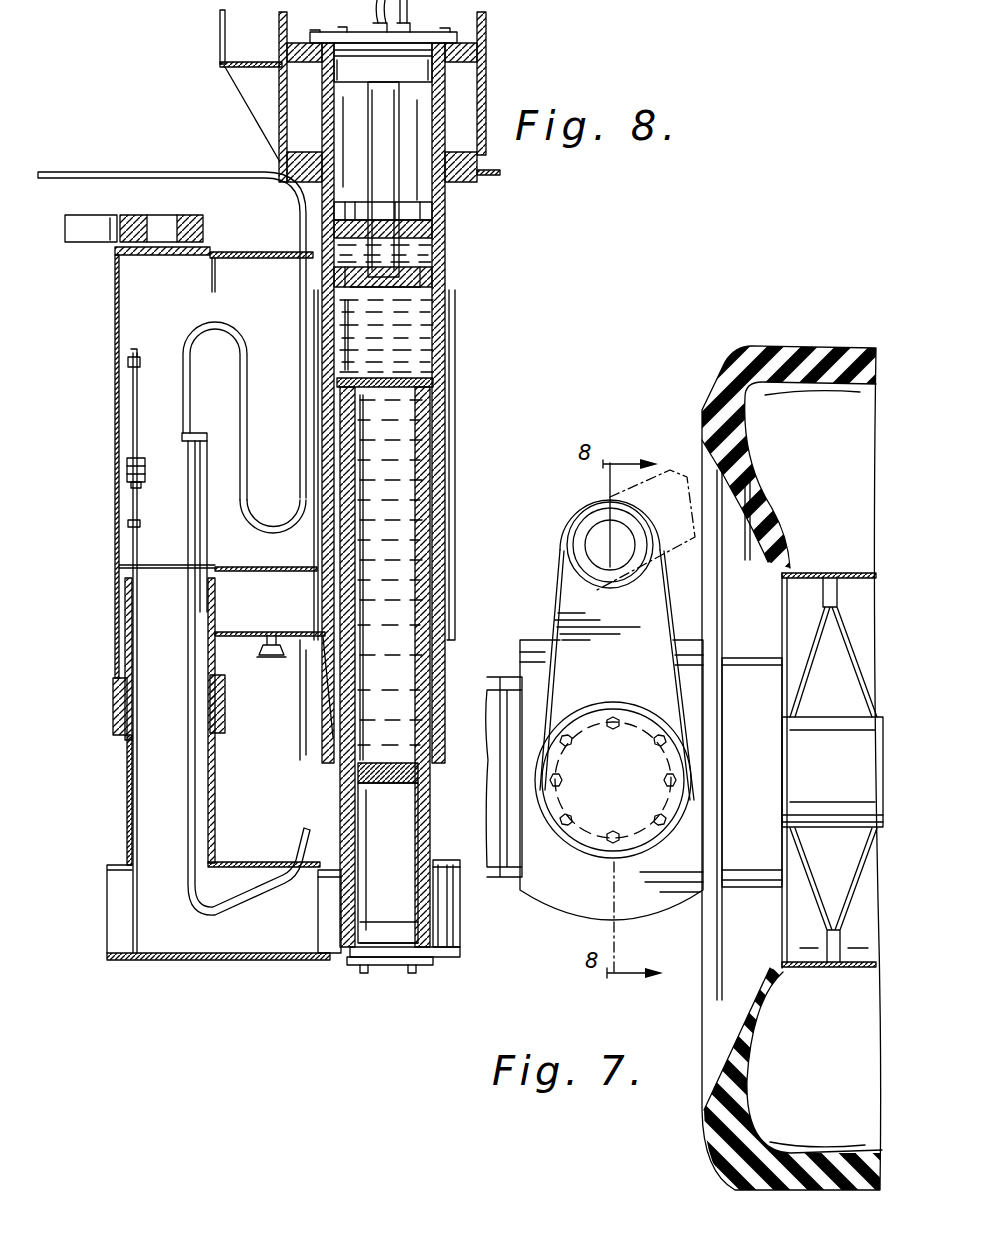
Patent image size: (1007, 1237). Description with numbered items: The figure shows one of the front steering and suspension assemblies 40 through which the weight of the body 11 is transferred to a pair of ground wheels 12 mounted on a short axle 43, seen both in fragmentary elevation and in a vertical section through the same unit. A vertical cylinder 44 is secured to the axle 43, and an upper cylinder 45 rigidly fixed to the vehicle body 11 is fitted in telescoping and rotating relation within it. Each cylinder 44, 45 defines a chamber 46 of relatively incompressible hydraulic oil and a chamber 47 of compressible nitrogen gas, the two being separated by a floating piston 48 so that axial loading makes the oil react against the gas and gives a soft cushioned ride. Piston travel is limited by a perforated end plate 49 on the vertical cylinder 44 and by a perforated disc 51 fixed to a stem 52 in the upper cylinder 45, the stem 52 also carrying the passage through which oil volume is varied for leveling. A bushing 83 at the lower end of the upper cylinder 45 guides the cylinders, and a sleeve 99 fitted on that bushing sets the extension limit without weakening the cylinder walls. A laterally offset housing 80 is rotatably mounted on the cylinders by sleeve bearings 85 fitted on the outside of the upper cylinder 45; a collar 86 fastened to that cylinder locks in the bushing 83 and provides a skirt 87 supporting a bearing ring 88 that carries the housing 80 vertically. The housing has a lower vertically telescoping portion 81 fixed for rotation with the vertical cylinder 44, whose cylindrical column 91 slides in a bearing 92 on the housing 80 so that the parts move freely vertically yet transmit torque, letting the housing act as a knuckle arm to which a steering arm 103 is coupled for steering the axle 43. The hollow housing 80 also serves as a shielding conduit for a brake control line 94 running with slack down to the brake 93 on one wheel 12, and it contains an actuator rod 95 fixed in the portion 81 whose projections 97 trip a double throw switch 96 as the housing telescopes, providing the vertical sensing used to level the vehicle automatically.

In FIG. 8, the body 11 is at (487, 60).
In FIG. 7, the ground wheel 12 is at (745, 352).
In FIG. 8, the front steering and suspension assembly 40 is at (455, 280).
In FIG. 7, the front steering and suspension assembly 40 is at (555, 537).
In FIG. 8, the axle 43 is at (437, 952).
In FIG. 7, the axle 43 is at (530, 895).
In FIG. 8, the vertical cylinder 44 is at (348, 800).
In FIG. 8, the upper cylinder 45 is at (440, 230).
In FIG. 7, the upper cylinder 45 is at (590, 732).
In FIG. 8, the chamber 46 is at (425, 332).
In FIG. 8, the chamber 47 is at (425, 117).
In FIG. 8, the floating piston 48 is at (440, 212).
In FIG. 8, the perforated end plate 49 is at (432, 386).
In FIG. 8, the perforated disc 51 is at (420, 283).
In FIG. 8, the stem 52 is at (373, 130).
In FIG. 8, the housing 80 is at (128, 358).
In FIG. 7, the housing 80 is at (566, 600).
In FIG. 8, the lower vertically telescoping portion 81 is at (110, 865).
In FIG. 8, the bushing 83 is at (330, 735).
In FIG. 8, the sleeve bearing 85 is at (455, 268).
In FIG. 8, the collar 86 is at (335, 760).
In FIG. 8, the skirt 87 is at (316, 690).
In FIG. 8, the bearing ring 88 is at (316, 650).
In FIG. 8, the cylindrical column 91 is at (125, 770).
In FIG. 8, the bearing 92 is at (113, 704).
In FIG. 7, the brake 93 is at (735, 887).
In FIG. 8, the brake control line 94 is at (188, 860).
In FIG. 8, the actuator rod 95 is at (143, 925).
In FIG. 8, the double throw switch 96 is at (127, 465).
In FIG. 8, the projection 97 is at (132, 375).
In FIG. 8, the sleeve 99 is at (433, 515).
In FIG. 8, the steering arm 103 is at (90, 240).
In FIG. 7, the steering arm 103 is at (670, 468).